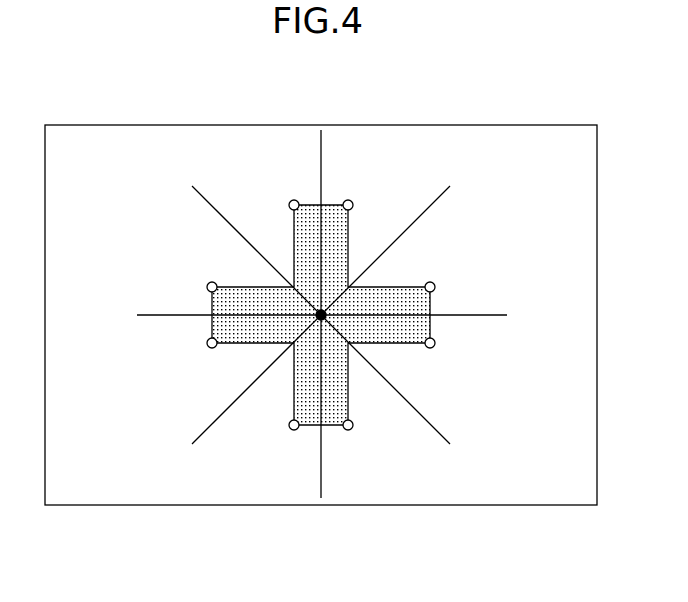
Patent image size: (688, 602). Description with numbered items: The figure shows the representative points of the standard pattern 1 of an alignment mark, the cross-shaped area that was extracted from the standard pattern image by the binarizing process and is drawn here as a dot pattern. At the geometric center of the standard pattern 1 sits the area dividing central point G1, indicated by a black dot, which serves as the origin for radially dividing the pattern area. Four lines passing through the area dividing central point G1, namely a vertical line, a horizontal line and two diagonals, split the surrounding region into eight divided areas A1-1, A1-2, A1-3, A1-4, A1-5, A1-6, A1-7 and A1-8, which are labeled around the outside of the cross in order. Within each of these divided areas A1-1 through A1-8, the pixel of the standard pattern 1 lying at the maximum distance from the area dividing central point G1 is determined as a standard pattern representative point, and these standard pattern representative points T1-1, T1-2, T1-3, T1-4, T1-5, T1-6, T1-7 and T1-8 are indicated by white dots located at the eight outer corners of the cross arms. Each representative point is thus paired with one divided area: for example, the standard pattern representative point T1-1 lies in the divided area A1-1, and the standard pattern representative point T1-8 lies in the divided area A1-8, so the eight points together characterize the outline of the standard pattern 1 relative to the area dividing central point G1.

The standard pattern 1 is at (333, 205).
The area dividing central point G1 is at (321, 315).
The standard pattern representative point T1-1 is at (352, 201).
The standard pattern representative point T1-2 is at (435, 285).
The standard pattern representative point T1-3 is at (435, 345).
The standard pattern representative point T1-4 is at (352, 429).
The standard pattern representative point T1-5 is at (290, 429).
The standard pattern representative point T1-6 is at (207, 345).
The standard pattern representative point T1-7 is at (207, 285).
The standard pattern representative point T1-8 is at (290, 201).
The divided area A1-1 is at (369, 167).
The divided area A1-2 is at (425, 250).
The divided area A1-3 is at (478, 361).
The divided area A1-4 is at (385, 408).
The divided area A1-5 is at (274, 463).
The divided area A1-6 is at (220, 379).
The divided area A1-7 is at (166, 269).
The divided area A1-8 is at (256, 226).